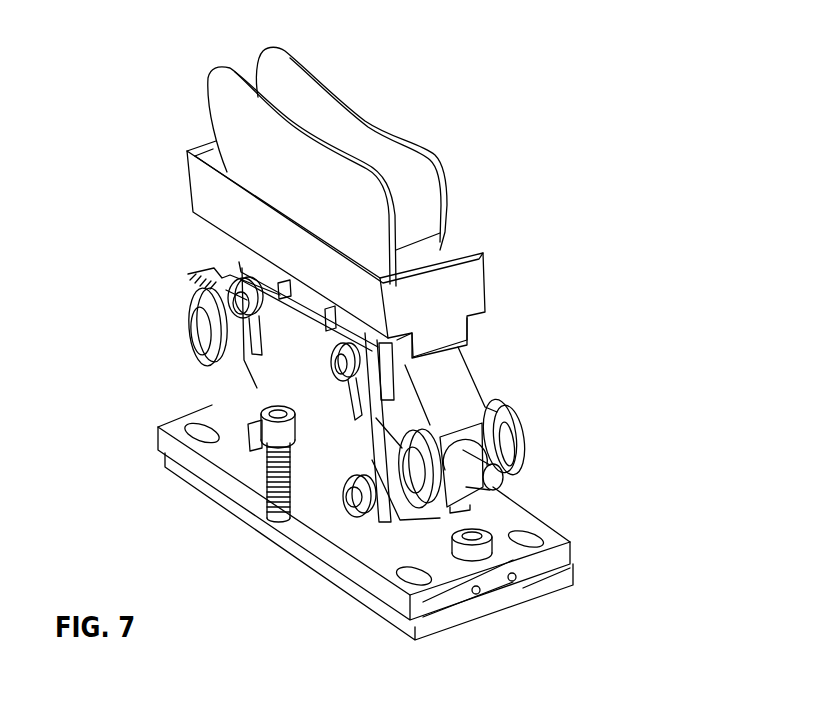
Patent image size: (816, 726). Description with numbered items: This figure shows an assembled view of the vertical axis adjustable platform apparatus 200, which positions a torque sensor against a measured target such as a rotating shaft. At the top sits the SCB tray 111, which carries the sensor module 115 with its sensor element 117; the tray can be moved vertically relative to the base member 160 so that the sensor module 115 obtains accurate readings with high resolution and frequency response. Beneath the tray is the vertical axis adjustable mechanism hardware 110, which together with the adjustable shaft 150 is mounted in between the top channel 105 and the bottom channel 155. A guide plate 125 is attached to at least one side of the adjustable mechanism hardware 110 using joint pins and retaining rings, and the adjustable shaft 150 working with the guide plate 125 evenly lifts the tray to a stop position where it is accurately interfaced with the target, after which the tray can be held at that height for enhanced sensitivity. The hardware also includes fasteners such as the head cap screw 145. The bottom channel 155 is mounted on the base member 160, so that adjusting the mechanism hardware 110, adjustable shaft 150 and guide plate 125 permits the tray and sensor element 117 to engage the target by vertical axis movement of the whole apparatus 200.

The vertical axis adjustable platform apparatus 200 is at (480, 74).
The sensor module 115 is at (595, 115).
The sensor element 117 is at (281, 88).
The SCB tray 111 is at (484, 256).
The vertical axis adjustable mechanism hardware 110 is at (595, 345).
The top channel 105 is at (242, 270).
The guide plate 125 is at (262, 393).
The head cap screw 145 is at (259, 422).
The bottom channel 155 is at (228, 413).
The adjustable shaft 150 is at (505, 472).
The base member 160 is at (557, 540).